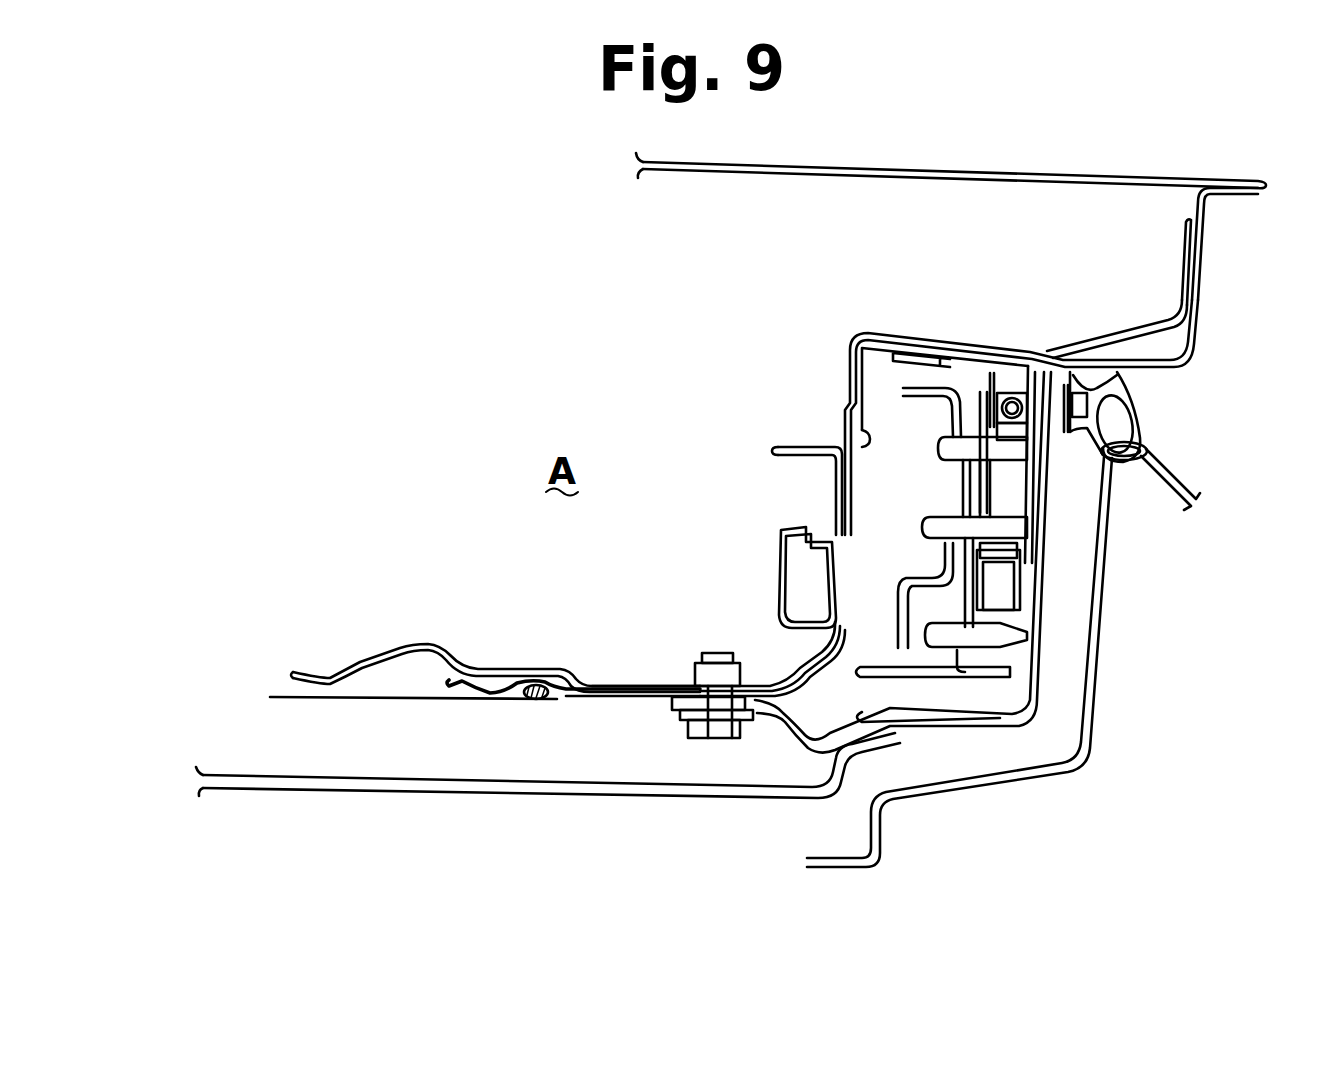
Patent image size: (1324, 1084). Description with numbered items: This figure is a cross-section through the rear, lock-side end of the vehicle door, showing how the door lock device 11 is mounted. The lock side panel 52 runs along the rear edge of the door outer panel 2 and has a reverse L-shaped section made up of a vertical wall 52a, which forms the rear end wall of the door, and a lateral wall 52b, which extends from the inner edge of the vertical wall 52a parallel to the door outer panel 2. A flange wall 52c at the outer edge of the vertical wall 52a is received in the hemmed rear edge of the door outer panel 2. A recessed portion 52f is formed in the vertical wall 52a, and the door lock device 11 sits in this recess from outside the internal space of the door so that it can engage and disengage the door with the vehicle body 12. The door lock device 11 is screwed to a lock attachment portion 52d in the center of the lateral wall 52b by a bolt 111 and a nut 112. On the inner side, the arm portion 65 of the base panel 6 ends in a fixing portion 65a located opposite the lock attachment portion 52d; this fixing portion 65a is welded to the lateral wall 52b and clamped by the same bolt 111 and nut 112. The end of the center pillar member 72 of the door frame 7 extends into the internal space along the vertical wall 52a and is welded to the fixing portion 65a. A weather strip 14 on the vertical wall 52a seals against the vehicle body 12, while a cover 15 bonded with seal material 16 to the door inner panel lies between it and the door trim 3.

The door outer panel 2 is at (1032, 170).
The door trim 3 is at (446, 795).
The base panel 6 is at (410, 646).
The door frame 7 is at (776, 443).
The door lock device 11 is at (916, 520).
The vehicle body 12 is at (1094, 701).
The weather strip 14 is at (1137, 406).
The cover 15 is at (397, 701).
The seal material 16 is at (533, 700).
The lock side panel 52 is at (1190, 328).
The vertical wall 52a is at (851, 372).
The lateral wall 52b is at (566, 700).
The flange wall 52c is at (1240, 184).
The lock attachment portion 52d is at (623, 700).
The recessed portion 52f is at (858, 436).
The arm portion 65 is at (517, 667).
The fixing portion 65a is at (660, 683).
The center pillar member 72 is at (781, 528).
The bolt 111 is at (697, 740).
The nut 112 is at (712, 672).